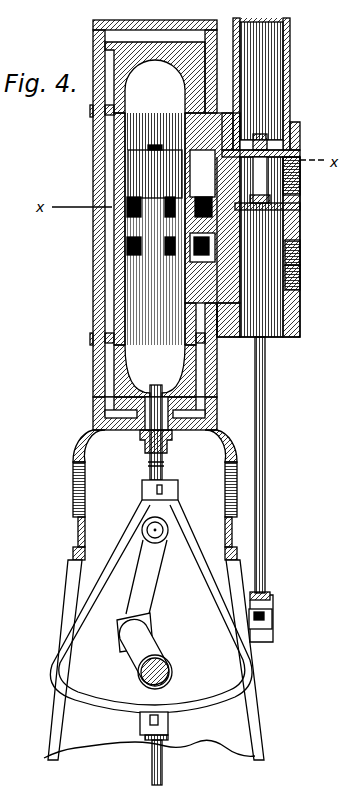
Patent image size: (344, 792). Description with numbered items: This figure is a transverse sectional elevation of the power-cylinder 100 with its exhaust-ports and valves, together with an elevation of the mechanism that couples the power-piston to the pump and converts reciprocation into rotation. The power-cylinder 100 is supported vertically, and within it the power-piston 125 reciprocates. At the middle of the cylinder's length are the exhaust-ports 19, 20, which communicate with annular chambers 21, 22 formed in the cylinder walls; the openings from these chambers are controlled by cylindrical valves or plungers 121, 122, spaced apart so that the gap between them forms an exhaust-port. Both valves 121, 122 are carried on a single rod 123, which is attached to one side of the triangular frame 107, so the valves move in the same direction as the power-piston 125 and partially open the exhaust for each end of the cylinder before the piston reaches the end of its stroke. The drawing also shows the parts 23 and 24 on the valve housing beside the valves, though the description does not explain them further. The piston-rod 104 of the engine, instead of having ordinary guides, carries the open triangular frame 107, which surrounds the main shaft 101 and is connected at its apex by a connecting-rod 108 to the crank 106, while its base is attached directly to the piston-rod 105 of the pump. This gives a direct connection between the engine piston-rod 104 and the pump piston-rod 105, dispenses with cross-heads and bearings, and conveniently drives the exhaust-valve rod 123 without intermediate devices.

The power-cylinder 100 is at (94, 148).
The power-piston 125 is at (155, 171).
The exhaust-port 19 is at (116, 200).
The exhaust-port 20 is at (128, 245).
The annular chamber 21 is at (203, 194).
The annular chamber 22 is at (204, 262).
The piston-rod 104 is at (165, 463).
The cylindrical valve 121 is at (289, 84).
The ring 23 is at (302, 176).
The ring 24 is at (300, 268).
The cylindrical valve 122 is at (290, 277).
The valve rod 123 is at (265, 478).
The triangular frame 107 is at (206, 589).
The connecting-rod 108 is at (145, 607).
The crank 106 is at (150, 636).
The shaft 101 is at (173, 672).
The pump piston-rod 105 is at (160, 765).